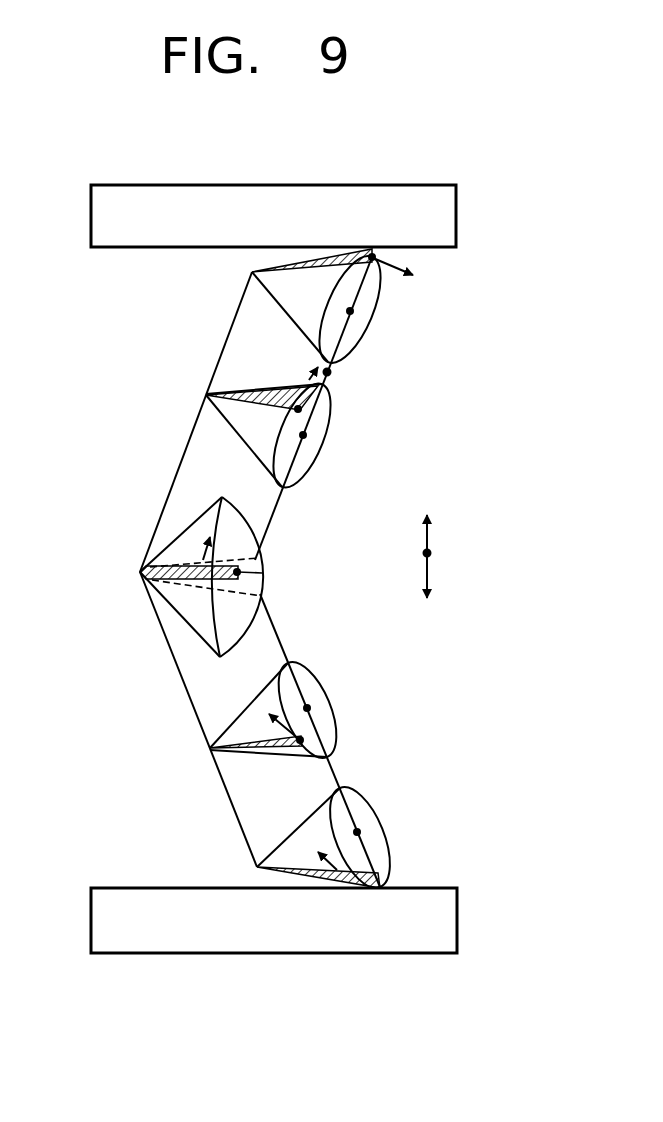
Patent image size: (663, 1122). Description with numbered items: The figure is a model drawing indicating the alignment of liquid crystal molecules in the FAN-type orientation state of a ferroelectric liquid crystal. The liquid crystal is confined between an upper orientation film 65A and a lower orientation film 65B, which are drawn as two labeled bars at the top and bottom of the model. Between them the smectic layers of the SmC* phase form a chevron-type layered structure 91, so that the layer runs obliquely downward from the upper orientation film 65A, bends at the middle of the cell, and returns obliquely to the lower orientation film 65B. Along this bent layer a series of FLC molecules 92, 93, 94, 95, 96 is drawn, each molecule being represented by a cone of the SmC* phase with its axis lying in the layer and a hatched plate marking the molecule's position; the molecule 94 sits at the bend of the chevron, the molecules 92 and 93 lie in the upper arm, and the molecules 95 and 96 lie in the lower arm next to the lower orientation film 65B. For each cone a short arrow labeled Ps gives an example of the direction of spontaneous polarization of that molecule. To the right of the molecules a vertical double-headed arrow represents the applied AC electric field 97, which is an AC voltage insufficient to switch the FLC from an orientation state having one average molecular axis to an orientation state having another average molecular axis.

The upper orientation film 65A is at (457, 209).
The lower orientation film 65B is at (458, 920).
The chevron-type layered structure 91 is at (330, 372).
The FLC molecule 92 is at (273, 266).
The FLC molecule 93 is at (238, 394).
The FLC molecule 94 is at (157, 552).
The FLC molecule 95 is at (228, 740).
The FLC molecule 96 is at (272, 850).
The applied AC electric field 97 is at (430, 553).